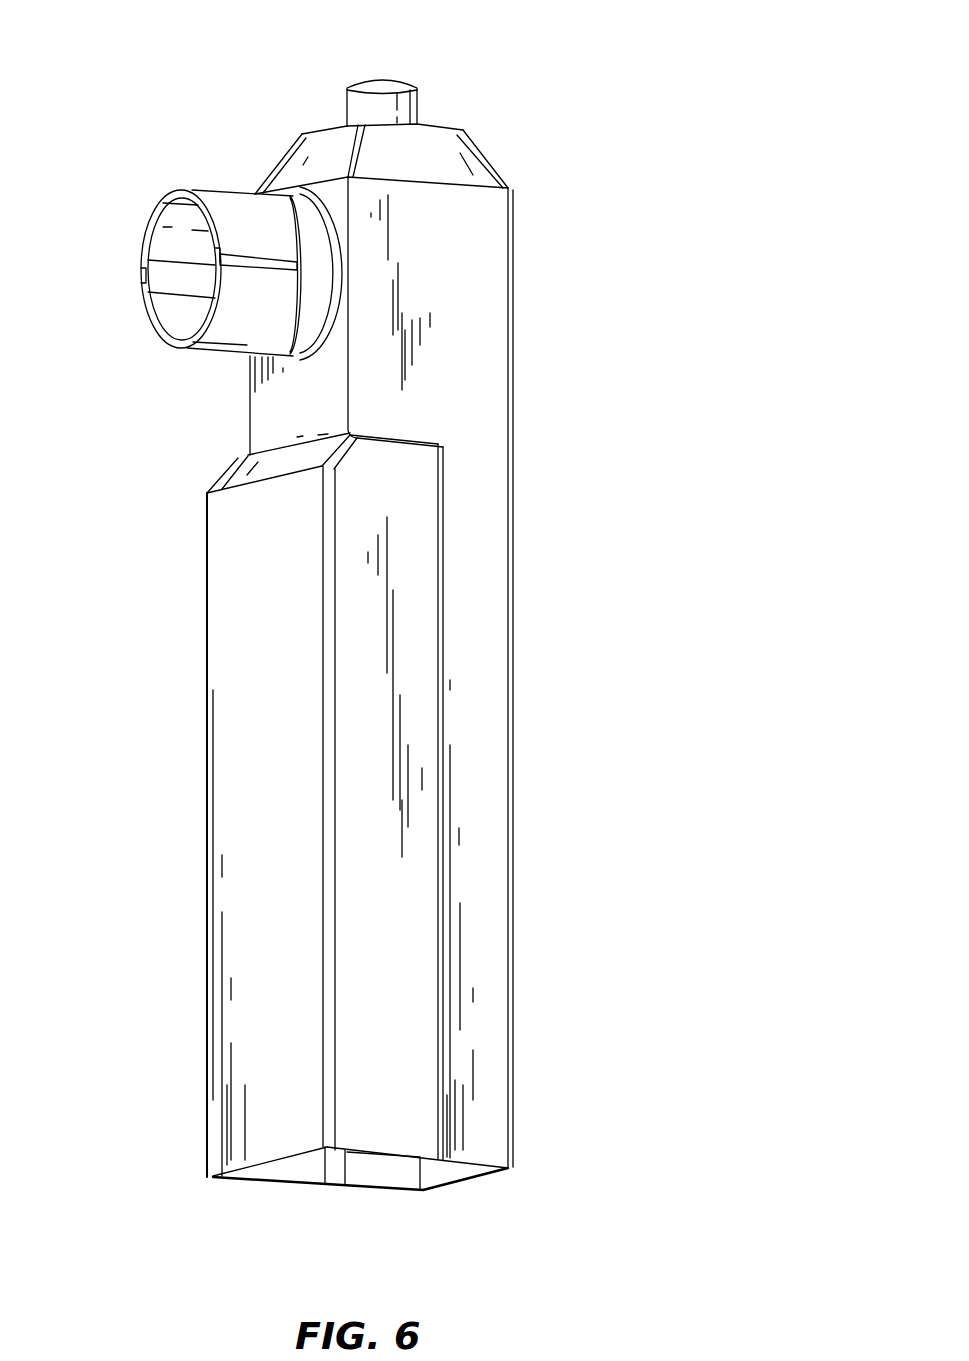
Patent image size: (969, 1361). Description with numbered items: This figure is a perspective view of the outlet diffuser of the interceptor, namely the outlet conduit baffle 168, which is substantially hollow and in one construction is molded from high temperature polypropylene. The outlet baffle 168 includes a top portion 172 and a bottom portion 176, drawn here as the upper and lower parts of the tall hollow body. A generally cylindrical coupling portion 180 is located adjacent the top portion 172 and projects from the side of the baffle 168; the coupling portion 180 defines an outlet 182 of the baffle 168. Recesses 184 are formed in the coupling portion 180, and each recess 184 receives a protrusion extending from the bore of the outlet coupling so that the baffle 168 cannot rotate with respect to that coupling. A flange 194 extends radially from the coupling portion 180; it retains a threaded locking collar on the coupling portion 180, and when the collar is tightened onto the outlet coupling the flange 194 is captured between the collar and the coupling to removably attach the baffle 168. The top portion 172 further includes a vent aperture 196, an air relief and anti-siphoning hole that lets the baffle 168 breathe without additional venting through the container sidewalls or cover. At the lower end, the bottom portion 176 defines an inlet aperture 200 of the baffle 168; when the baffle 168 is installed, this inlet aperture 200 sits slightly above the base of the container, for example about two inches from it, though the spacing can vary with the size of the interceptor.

The outlet conduit baffle 168 is at (582, 78).
The top portion 172 is at (513, 218).
The bottom portion 176 is at (514, 1118).
The coupling portion 180 is at (232, 205).
The outlet 182 is at (175, 320).
The recesses 184 is at (140, 277).
The flange 194 is at (290, 332).
The vent aperture 196 is at (381, 78).
The inlet aperture 200 is at (299, 1165).